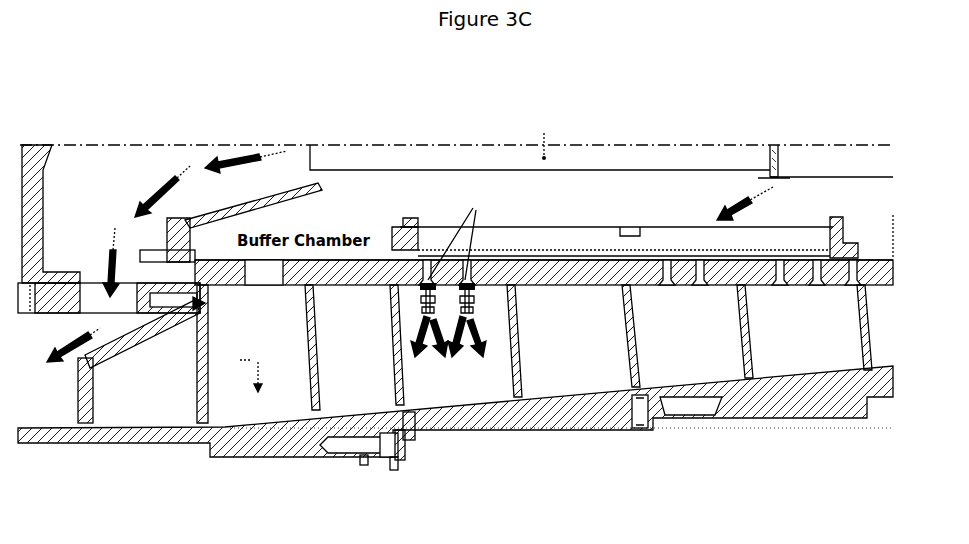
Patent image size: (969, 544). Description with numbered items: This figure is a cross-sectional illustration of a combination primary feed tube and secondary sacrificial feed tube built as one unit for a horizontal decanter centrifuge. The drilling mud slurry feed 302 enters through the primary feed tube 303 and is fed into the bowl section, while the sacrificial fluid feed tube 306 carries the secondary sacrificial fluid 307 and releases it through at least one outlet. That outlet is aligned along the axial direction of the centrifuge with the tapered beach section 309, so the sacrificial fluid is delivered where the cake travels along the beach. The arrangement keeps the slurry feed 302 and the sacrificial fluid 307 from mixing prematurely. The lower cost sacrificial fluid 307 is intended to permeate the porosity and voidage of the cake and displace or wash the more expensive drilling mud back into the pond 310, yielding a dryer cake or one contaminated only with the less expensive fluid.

The slurry feed 302 is at (108, 195).
The primary feed tube 303 is at (600, 122).
The sacrificial fluid feed tube 306 is at (783, 180).
The sacrificial fluid 307 is at (487, 346).
The tapered beach section 309 is at (587, 390).
The pond 310 is at (257, 390).